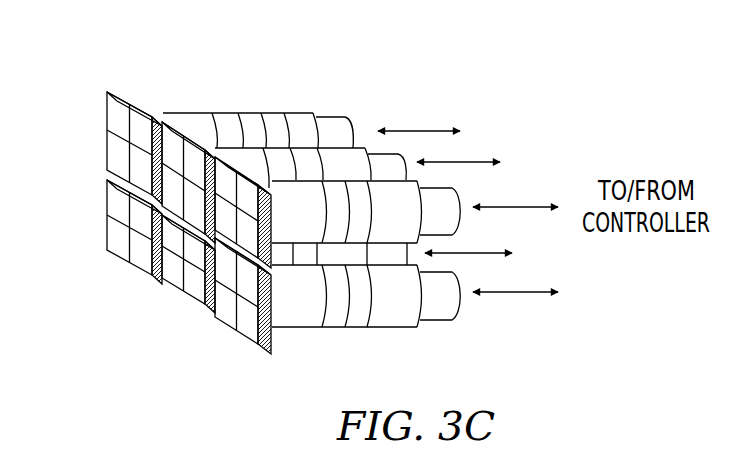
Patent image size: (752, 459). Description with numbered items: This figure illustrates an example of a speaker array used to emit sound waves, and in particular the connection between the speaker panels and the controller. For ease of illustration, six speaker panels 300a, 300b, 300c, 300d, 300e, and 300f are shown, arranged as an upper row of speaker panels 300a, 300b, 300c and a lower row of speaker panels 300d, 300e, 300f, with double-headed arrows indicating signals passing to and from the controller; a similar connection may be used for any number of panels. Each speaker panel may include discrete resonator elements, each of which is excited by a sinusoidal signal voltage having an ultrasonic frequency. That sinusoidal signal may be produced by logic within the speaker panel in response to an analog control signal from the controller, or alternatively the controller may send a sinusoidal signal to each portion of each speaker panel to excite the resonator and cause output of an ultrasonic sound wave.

The speaker panel 300a is at (130, 100).
The speaker panel 300b is at (189, 131).
The speaker panel 300c is at (234, 164).
The speaker panel 300d is at (132, 263).
The speaker panel 300e is at (188, 294).
The speaker panel 300f is at (238, 331).